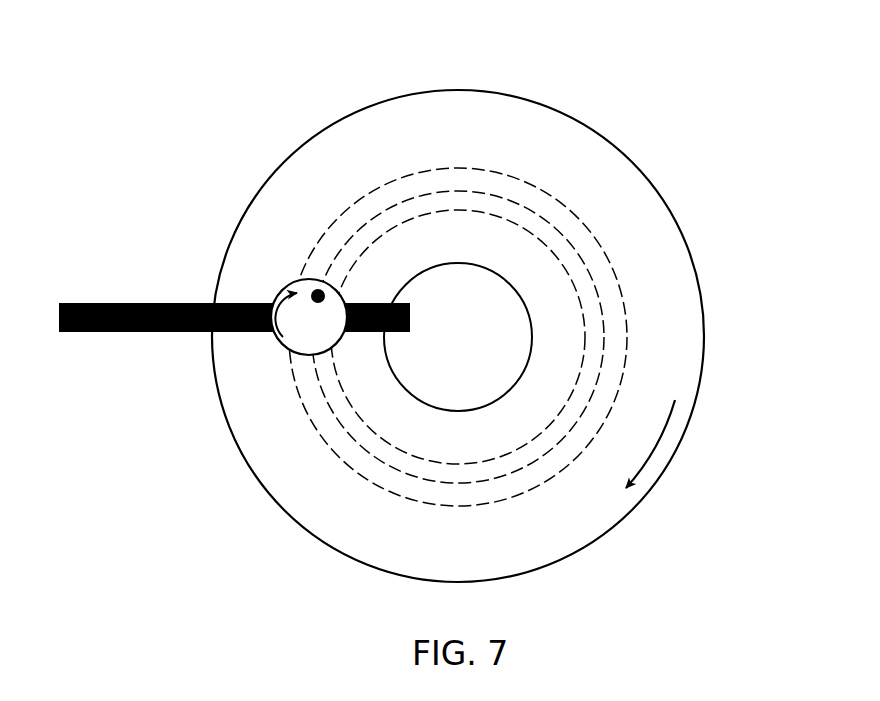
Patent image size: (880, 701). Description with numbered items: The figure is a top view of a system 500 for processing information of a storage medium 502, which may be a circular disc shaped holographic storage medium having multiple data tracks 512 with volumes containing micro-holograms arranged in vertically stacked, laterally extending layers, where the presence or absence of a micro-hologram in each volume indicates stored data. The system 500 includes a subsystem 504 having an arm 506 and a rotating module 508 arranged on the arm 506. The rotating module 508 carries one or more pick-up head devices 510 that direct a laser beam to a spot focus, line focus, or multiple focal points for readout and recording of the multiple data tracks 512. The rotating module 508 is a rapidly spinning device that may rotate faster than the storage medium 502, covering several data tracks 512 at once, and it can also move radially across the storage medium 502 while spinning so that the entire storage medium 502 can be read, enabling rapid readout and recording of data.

The system 500 is at (680, 58).
The storage medium 502 is at (677, 218).
The subsystem 504 is at (182, 297).
The arm 506 is at (117, 303).
The rotating module 508 is at (285, 345).
The pick-up head device 510 is at (314, 290).
The data tracks 512 is at (605, 422).